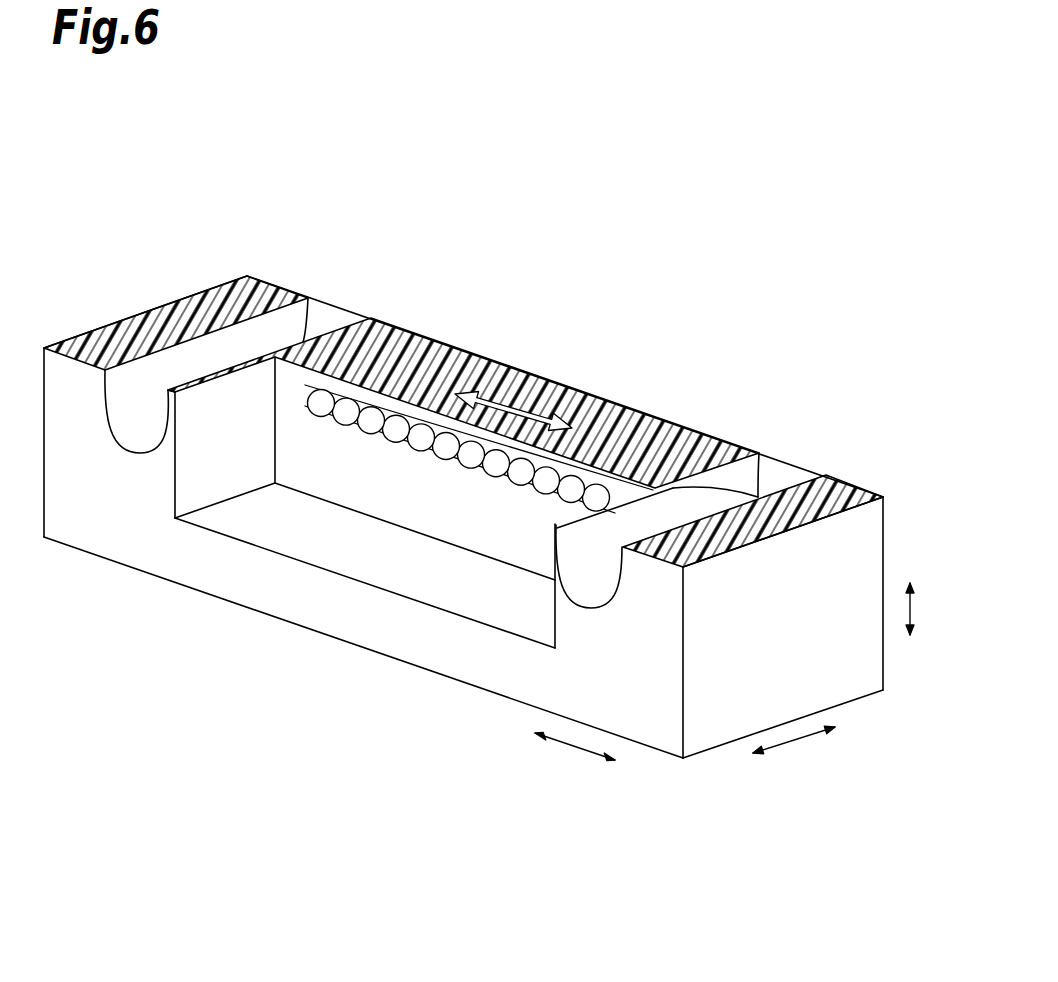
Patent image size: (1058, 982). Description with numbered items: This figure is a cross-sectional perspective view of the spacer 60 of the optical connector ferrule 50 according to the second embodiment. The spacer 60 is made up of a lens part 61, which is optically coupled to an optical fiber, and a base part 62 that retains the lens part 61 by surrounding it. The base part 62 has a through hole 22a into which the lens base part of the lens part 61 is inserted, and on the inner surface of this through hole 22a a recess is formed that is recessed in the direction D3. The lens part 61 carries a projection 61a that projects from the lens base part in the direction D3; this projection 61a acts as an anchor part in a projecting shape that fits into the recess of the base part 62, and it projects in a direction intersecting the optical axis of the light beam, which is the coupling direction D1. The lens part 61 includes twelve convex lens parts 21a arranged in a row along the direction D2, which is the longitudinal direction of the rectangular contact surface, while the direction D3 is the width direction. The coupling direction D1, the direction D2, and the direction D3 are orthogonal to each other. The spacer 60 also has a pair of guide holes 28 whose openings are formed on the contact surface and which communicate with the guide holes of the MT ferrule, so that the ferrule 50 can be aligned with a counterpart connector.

The optical connector ferrule 50 is at (501, 526).
The spacer 60 is at (501, 550).
The base part 62 is at (463, 532).
The lens part 61 is at (446, 451).
The projection 61a is at (520, 408).
The guide holes 28 is at (127, 420).
The convex lens parts 21a is at (323, 410).
The through hole 22a is at (479, 430).
The coupling direction D1 is at (794, 755).
The direction D2 is at (575, 759).
The direction D3 is at (932, 609).